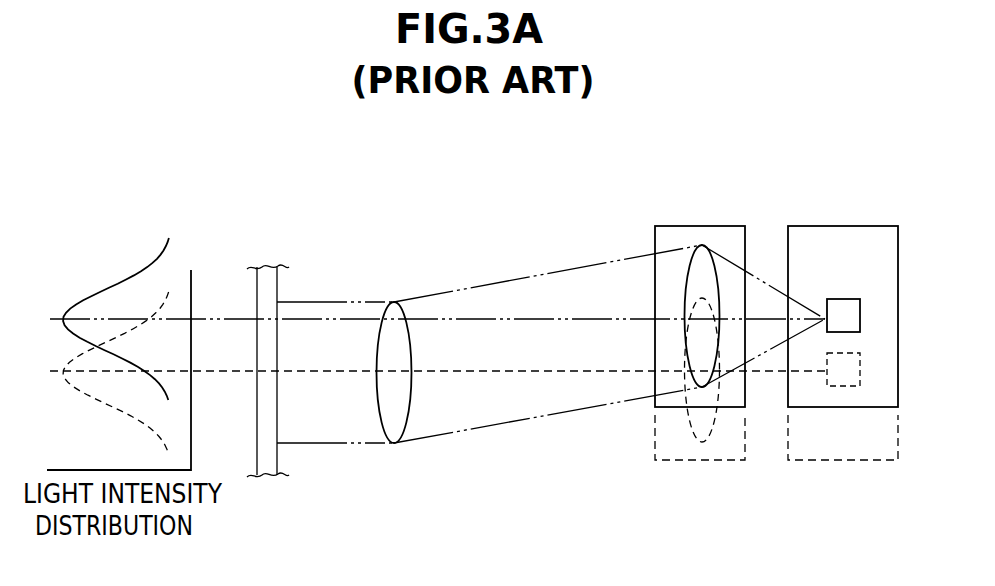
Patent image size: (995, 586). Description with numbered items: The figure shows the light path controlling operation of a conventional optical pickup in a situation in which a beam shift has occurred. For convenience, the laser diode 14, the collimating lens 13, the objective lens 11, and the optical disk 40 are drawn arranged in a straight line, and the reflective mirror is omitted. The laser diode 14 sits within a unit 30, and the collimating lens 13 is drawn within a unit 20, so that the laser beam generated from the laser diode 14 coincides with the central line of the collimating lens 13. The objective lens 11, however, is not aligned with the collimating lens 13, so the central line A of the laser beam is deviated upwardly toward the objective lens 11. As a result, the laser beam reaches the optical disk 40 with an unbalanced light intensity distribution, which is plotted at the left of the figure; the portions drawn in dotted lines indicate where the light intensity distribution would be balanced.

The optical disk 40 is at (262, 283).
The objective lens 11 is at (395, 313).
The central line of the laser beam A is at (522, 318).
The optical unit 20 is at (672, 232).
The collimating lens 13 is at (705, 262).
The laser diode 14 is at (843, 307).
The detector unit 30 is at (858, 243).